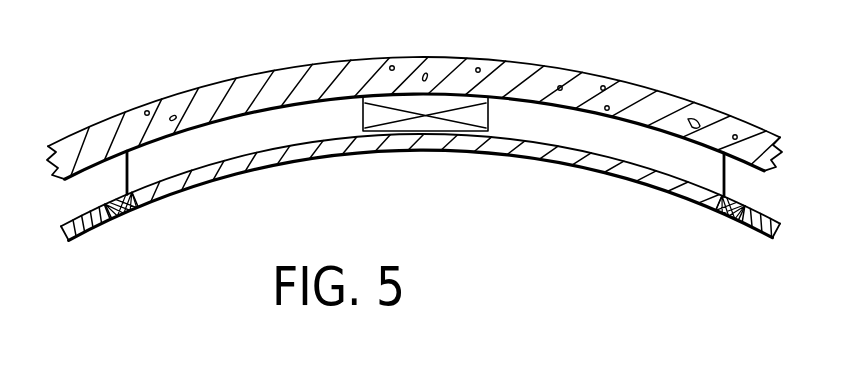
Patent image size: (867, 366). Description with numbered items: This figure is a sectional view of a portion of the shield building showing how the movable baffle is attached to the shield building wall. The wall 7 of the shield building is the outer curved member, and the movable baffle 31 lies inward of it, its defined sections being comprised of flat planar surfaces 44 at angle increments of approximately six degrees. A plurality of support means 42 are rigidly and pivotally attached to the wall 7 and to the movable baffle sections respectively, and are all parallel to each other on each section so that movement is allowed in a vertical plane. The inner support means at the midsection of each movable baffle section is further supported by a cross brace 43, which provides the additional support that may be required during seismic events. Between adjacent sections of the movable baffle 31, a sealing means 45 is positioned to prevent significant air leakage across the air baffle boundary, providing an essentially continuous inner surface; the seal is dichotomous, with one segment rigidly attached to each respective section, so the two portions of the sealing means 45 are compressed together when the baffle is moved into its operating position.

The wall 7 is at (98, 125).
The support means 42 is at (124, 186).
The cross brace 43 is at (393, 124).
The flat planar surfaces 44 is at (258, 160).
The movable baffle 31 is at (645, 178).
The sealing means 45 is at (129, 210).